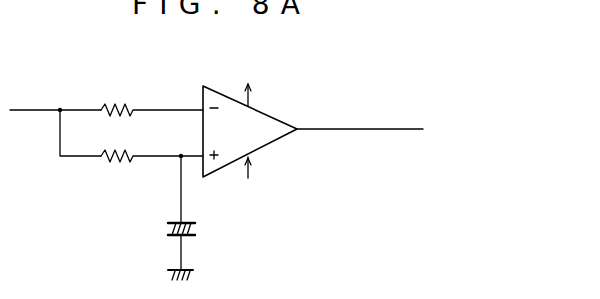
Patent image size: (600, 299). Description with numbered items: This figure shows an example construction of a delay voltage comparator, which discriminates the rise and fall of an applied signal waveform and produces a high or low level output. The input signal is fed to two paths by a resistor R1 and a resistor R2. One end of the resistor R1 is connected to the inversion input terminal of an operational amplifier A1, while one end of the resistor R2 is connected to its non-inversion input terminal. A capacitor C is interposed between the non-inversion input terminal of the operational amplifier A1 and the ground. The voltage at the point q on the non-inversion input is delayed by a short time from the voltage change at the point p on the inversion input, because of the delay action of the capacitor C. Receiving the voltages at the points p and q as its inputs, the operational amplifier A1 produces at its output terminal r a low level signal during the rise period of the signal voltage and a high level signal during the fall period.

The resistor R1 is at (113, 99).
The resistor R2 is at (110, 165).
The operational amplifier A1 is at (272, 118).
The capacitor C is at (200, 228).
The inversion input terminal point p is at (183, 99).
The non-inversion input terminal point q is at (185, 144).
The output terminal r is at (341, 119).